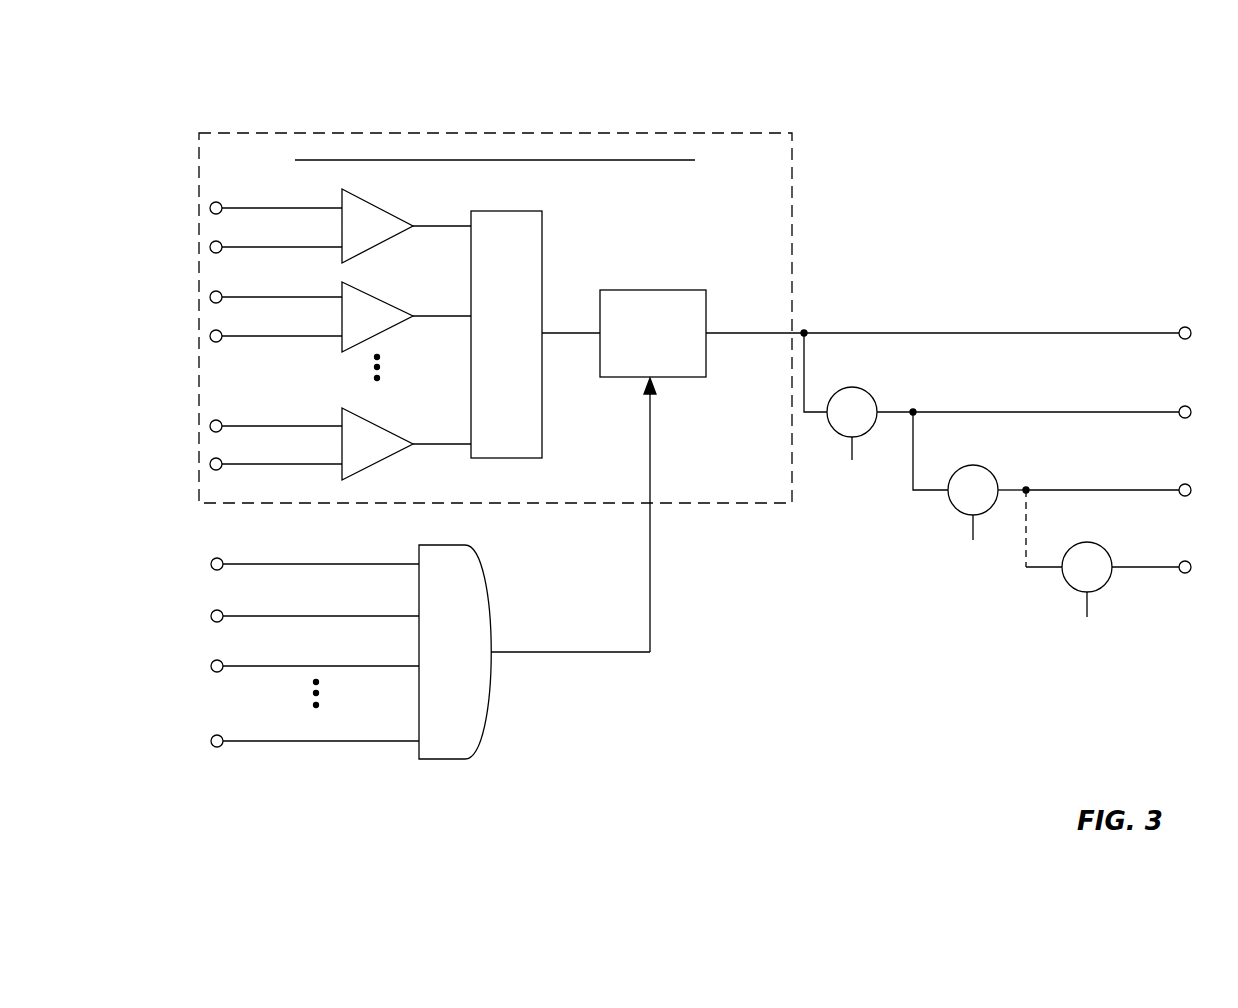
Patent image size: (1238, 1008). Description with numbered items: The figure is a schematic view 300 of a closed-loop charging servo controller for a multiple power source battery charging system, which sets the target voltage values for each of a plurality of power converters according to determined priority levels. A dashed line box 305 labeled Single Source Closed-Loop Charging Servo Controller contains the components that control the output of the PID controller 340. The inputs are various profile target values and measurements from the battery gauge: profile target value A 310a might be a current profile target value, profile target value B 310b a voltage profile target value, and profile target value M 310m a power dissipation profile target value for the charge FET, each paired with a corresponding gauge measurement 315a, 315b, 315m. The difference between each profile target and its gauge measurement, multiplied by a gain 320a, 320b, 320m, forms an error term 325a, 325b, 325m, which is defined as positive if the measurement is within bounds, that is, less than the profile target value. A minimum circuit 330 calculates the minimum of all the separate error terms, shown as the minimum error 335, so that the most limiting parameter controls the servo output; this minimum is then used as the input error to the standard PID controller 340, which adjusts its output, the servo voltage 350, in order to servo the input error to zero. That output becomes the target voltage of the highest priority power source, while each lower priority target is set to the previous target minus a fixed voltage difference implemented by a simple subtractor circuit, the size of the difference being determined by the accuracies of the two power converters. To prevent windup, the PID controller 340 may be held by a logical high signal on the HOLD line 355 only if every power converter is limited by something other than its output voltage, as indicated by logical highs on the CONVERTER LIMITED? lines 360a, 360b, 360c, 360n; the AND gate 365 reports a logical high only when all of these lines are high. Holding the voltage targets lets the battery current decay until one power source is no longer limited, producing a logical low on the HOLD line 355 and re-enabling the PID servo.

The schematic view 300 is at (907, 144).
The dashed line box 305 is at (291, 132).
The profile target value A 310a is at (237, 195).
The profile target value B 310b is at (237, 285).
The profile target value M 310m is at (231, 414).
The gauge measurement A 315a is at (231, 234).
The gauge measurement B 315b is at (231, 323).
The gauge measurement M 315m is at (231, 453).
The gain GA 320a is at (368, 203).
The gain GB 320b is at (368, 294).
The gain Gm 320m is at (368, 420).
The error term εA 325a is at (447, 204).
The error term εB 325b is at (448, 318).
The error term εm 325m is at (448, 447).
The minimum circuit 330 is at (495, 355).
The minimum error term εmin 335 is at (554, 311).
The PID controller 340 is at (642, 364).
The servo voltage VSERVO 350 is at (723, 306).
The HOLD line 355 is at (677, 404).
The CONVERTER A LIMITED? line 360a is at (238, 551).
The CONVERTER B LIMITED? line 360b is at (238, 603).
The CONVERTER C LIMITED? line 360c is at (238, 652).
The CONVERTER n LIMITED? line 360n is at (238, 728).
The AND gate 365 is at (433, 545).